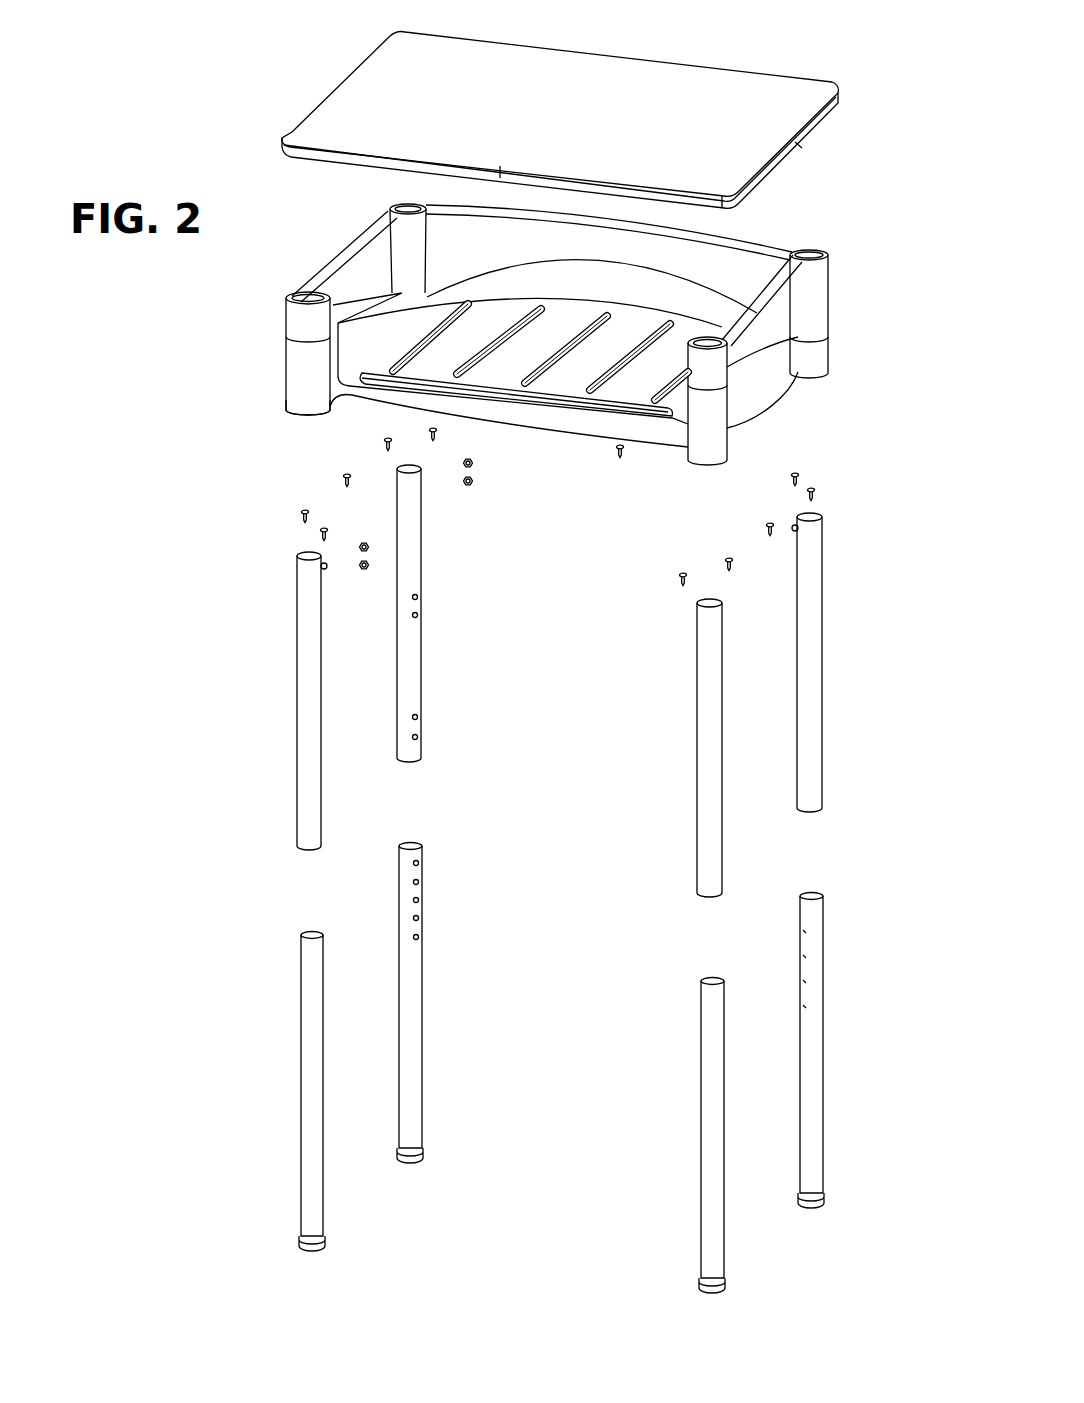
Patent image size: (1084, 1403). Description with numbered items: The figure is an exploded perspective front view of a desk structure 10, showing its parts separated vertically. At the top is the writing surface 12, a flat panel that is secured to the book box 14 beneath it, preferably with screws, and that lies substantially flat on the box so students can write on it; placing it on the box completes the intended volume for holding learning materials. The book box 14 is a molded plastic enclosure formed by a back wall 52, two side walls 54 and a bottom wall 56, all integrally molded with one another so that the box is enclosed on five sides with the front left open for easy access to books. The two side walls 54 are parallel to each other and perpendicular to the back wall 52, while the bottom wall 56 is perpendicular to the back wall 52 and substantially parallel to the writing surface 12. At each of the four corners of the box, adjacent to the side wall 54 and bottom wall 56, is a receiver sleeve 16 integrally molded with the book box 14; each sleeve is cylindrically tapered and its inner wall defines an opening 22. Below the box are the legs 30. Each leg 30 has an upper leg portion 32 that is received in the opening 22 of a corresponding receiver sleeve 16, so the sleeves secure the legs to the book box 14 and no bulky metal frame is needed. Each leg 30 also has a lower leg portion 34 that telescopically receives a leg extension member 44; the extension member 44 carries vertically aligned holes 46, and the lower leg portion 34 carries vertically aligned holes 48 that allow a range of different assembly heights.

The desk structure 10 is at (246, 56).
The writing surface 12 is at (715, 103).
The book box 14 is at (828, 300).
The receiver sleeve 16 is at (305, 372).
The opening 22 is at (305, 412).
The leg 30 is at (811, 684).
The upper leg portion 32 is at (297, 573).
The lower leg portion 34 is at (297, 806).
The leg extension member 44 is at (809, 1075).
The holes 46 is at (418, 880).
The holes 48 is at (420, 716).
The back wall 52 is at (758, 262).
The side wall 54 is at (343, 252).
The bottom wall 56 is at (577, 372).